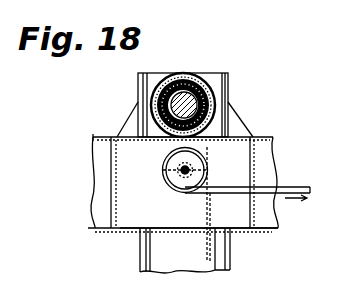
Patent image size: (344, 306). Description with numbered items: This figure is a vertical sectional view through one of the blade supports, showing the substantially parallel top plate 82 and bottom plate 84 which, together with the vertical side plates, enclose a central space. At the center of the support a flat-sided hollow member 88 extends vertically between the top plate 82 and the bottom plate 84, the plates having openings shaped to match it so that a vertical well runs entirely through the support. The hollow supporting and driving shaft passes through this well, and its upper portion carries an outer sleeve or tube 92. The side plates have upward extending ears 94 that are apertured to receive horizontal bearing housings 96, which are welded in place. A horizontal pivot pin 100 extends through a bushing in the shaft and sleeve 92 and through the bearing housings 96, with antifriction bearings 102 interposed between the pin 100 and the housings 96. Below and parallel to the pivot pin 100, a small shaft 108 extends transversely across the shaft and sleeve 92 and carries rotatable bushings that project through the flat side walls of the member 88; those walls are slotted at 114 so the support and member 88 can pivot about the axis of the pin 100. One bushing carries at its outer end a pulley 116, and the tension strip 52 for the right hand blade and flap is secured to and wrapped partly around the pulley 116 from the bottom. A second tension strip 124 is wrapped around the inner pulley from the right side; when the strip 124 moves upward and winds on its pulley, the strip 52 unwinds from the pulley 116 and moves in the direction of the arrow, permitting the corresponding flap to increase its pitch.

The tension strip 52 is at (289, 185).
The top plate 82 is at (241, 117).
The bottom plate 84 is at (240, 235).
The flat-sided hollow member 88 is at (251, 208).
The outer sleeve or tube 92 is at (229, 88).
The ear 94 is at (228, 129).
The bearing housing 96 is at (223, 78).
The horizontal pivot pin 100 is at (165, 75).
The antifriction bearing 102 is at (201, 76).
The small shaft 108 is at (191, 171).
The slot 114 is at (158, 181).
The pulley 116 is at (164, 152).
The tension strip 124 is at (233, 258).